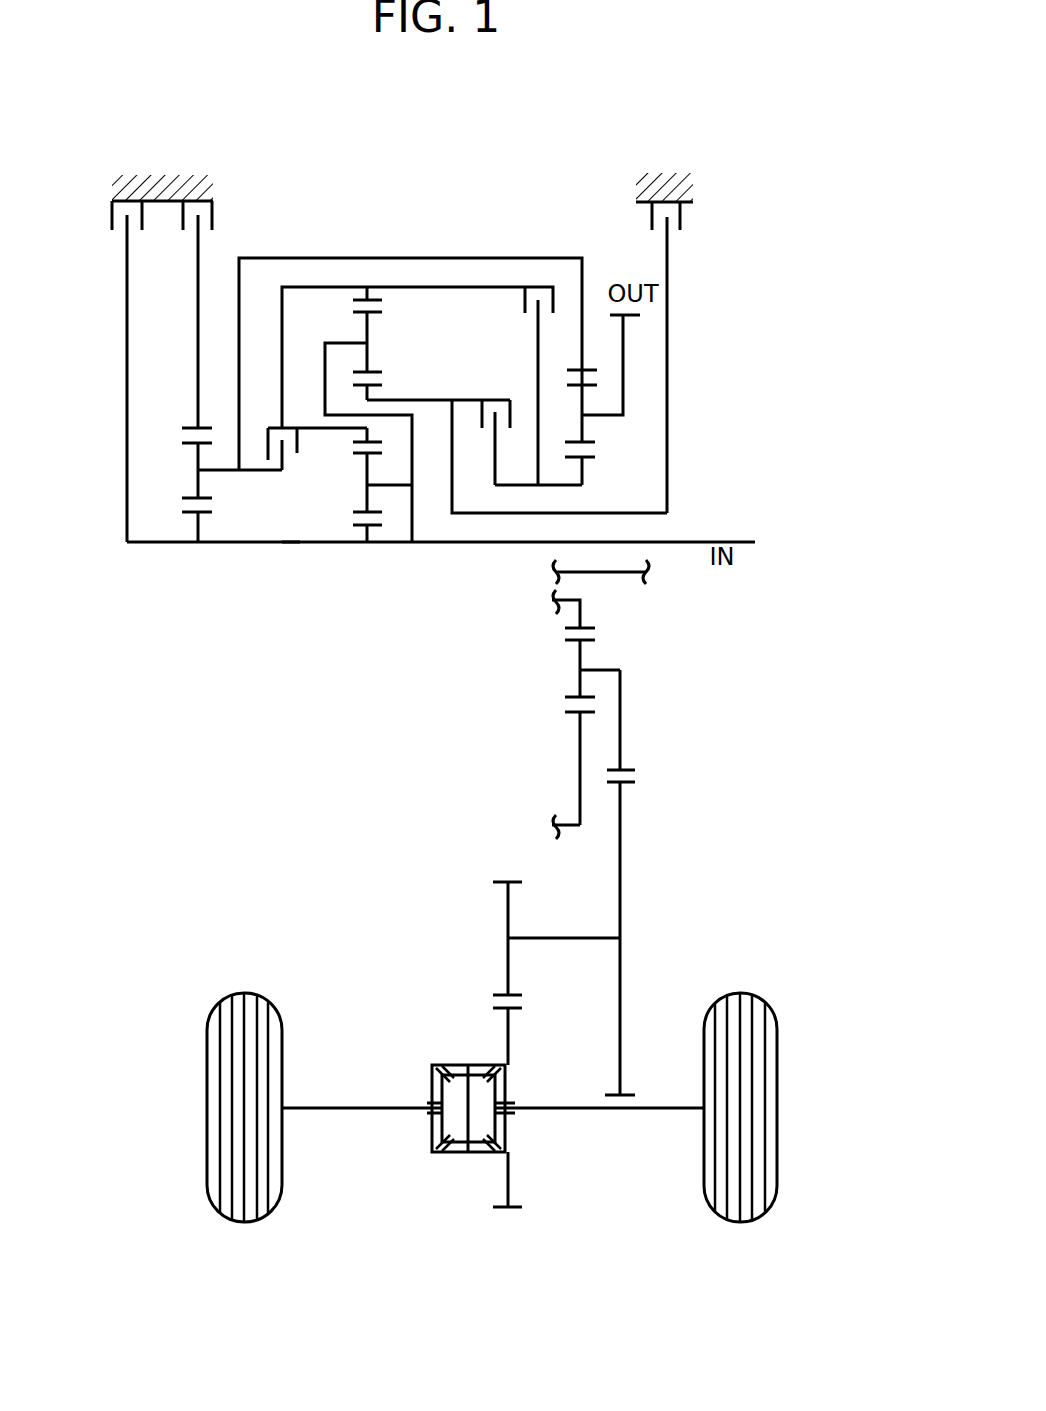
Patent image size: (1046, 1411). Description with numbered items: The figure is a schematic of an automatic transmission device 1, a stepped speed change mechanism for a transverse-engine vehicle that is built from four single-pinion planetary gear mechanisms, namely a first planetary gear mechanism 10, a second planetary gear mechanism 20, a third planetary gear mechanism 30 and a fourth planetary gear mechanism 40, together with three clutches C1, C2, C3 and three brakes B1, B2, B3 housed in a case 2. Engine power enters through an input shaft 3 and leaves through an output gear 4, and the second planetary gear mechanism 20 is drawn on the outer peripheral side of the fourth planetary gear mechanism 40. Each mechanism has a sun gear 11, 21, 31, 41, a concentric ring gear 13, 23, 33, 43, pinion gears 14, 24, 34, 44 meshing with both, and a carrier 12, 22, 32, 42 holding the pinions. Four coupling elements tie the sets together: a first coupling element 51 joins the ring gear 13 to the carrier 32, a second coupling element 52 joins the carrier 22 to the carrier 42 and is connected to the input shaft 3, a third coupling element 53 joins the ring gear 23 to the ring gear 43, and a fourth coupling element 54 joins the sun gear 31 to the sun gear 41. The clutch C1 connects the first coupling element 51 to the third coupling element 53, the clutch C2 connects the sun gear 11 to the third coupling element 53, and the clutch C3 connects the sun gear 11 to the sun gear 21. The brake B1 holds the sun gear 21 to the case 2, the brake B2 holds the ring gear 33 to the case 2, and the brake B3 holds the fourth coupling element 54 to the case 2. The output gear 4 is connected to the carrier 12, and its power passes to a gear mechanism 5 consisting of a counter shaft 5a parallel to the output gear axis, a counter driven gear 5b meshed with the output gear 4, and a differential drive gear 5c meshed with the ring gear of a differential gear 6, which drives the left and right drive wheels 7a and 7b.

The automatic transmission device 1 is at (543, 127).
The case 2 is at (148, 182).
The input shaft 3 is at (704, 538).
The output gear 4 is at (612, 313).
The gear mechanism 5 is at (673, 926).
The counter shaft 5a is at (545, 938).
The counter driven gear 5b is at (632, 790).
The differential drive gear 5c is at (500, 880).
The differential gear 6 is at (451, 1064).
The drive wheel 7a is at (245, 993).
The drive wheel 7b is at (745, 993).
The first planetary gear mechanism 10 is at (612, 455).
The sun gear 11 is at (588, 464).
The carrier 12 is at (600, 416).
The ring gear 13 is at (576, 370).
The pinion gears 14 is at (575, 441).
The second planetary gear mechanism 20 is at (446, 343).
The sun gear 21 is at (386, 383).
The carrier 22 is at (351, 343).
The ring gear 23 is at (370, 299).
The pinion gears 24 is at (376, 372).
The third planetary gear mechanism 30 is at (164, 390).
The sun gear 31 is at (212, 508).
The carrier 32 is at (207, 466).
The ring gear 33 is at (184, 428).
The pinion gears 34 is at (184, 496).
The fourth planetary gear mechanism 40 is at (344, 553).
The sun gear 41 is at (366, 545).
The carrier 42 is at (402, 545).
The ring gear 43 is at (351, 441).
The pinion gears 44 is at (356, 511).
The first coupling element 51 is at (372, 257).
The second coupling element 52 is at (323, 394).
The third coupling element 53 is at (281, 337).
The fourth coupling element 54 is at (288, 542).
The brake B1 is at (657, 192).
The brake B2 is at (199, 198).
The brake B3 is at (132, 198).
The clutch C1 is at (283, 426).
The clutch C2 is at (522, 292).
The clutch C3 is at (492, 400).